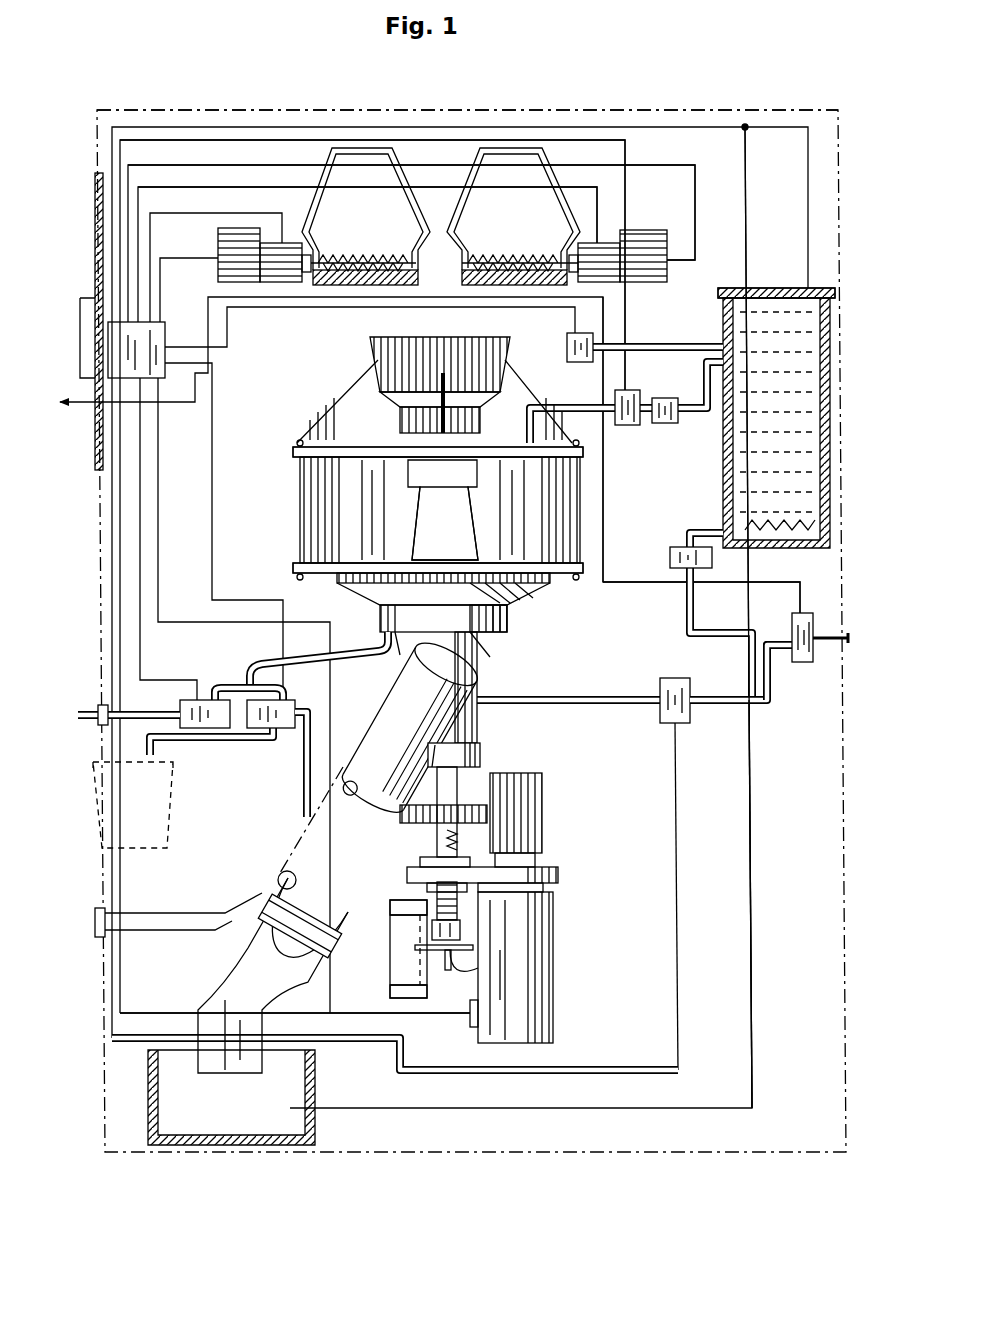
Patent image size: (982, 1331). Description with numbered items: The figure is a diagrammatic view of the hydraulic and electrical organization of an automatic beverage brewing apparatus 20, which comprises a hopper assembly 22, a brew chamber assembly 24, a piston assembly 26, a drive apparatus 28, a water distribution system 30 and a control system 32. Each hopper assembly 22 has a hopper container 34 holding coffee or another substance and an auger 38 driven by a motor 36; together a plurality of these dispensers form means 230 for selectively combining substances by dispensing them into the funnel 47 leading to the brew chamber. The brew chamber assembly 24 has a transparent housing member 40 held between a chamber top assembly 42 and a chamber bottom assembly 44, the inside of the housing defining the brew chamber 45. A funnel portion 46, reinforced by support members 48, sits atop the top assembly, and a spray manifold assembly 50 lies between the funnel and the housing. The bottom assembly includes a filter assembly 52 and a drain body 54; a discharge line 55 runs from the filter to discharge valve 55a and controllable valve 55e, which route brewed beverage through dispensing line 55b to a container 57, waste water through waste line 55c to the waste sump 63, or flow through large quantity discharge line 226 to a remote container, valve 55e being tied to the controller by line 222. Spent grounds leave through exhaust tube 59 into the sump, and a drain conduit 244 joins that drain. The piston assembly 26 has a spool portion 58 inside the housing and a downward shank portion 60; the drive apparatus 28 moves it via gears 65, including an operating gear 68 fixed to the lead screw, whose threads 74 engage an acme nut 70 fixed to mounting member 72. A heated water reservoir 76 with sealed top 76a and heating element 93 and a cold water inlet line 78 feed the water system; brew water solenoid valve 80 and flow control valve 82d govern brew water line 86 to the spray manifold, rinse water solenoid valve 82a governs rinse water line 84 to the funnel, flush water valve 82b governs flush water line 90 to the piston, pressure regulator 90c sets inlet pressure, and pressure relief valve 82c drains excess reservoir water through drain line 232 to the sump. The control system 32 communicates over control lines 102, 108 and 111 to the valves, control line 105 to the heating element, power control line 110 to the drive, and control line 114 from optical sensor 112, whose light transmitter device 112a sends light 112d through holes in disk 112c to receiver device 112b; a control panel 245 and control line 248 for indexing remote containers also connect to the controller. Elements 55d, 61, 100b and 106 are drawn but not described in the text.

The automatic beverage brewing apparatus 20 is at (88, 182).
The hopper assembly 22 is at (288, 148).
The brew chamber assembly 24 is at (292, 490).
The piston assembly 26 is at (512, 640).
The drive apparatus 28 is at (557, 977).
The water distribution system 30 is at (770, 790).
The control system 32 is at (125, 320).
The hopper container 34 is at (325, 148).
The motor 36 is at (218, 240).
The auger 38 is at (368, 255).
The housing member 40 is at (318, 520).
The chamber top assembly 42 is at (340, 400).
The chamber bottom assembly 44 is at (320, 592).
The brew chamber 45 is at (405, 540).
The funnel portion 46 is at (382, 356).
The funnel 47 is at (395, 337).
The support members 48 is at (342, 420).
The spray manifold assembly 50 is at (293, 452).
The filter assembly 52 is at (320, 578).
The drain body 54 is at (508, 620).
The discharge line 55 is at (380, 640).
The discharge valve 55a is at (280, 740).
The dispensing line 55b is at (208, 740).
The waste line 55c is at (305, 800).
The control line 55d is at (212, 512).
The controllable valve 55e is at (210, 688).
The container 57 is at (160, 820).
The spool portion 58 is at (440, 505).
The exhaust tube 59 is at (270, 892).
The shank portion 60 is at (470, 775).
The shaft 61 is at (478, 718).
The waste sump 63 is at (315, 1085).
The gears 65 is at (545, 808).
The operating gear 68 is at (400, 810).
The acme nut 70 is at (420, 862).
The mounting member 72 is at (560, 872).
The threads 74 is at (445, 840).
The heated water reservoir 76 is at (720, 340).
The sealed top 76a is at (760, 288).
The cold water inlet line 78 is at (815, 615).
The brew water solenoid valve 80 is at (627, 425).
The rinse water solenoid valve 82a is at (575, 333).
The flush water valve 82b is at (672, 678).
The pressure relief valve 82c is at (670, 557).
The flow control valve 82d is at (668, 423).
The rinse water line 84 is at (672, 345).
The brew water line 86 is at (575, 403).
The flush water line 90 is at (720, 710).
The pressure regulator 90c is at (805, 662).
The heating element 93 is at (760, 520).
The control line 100b is at (605, 582).
The control line 102 is at (262, 307).
The control line 105 is at (745, 118).
The control line 106 is at (690, 140).
The control line 108 is at (608, 130).
The power control line 110 is at (408, 1013).
The control line 111 is at (676, 885).
The optical sensor 112 is at (388, 968).
The light transmitter device 112a is at (398, 910).
The receiver device 112b is at (395, 993).
The disk 112c is at (480, 968).
The light 112d is at (425, 920).
The control line 114 is at (330, 740).
The line 222 is at (138, 517).
The large quantity discharge line 226 is at (135, 710).
The means for selectively combining 230 is at (440, 100).
The drain line 232 is at (750, 775).
The drain conduit 244 is at (105, 913).
The control panel 245 is at (80, 310).
The control line 248 is at (80, 402).